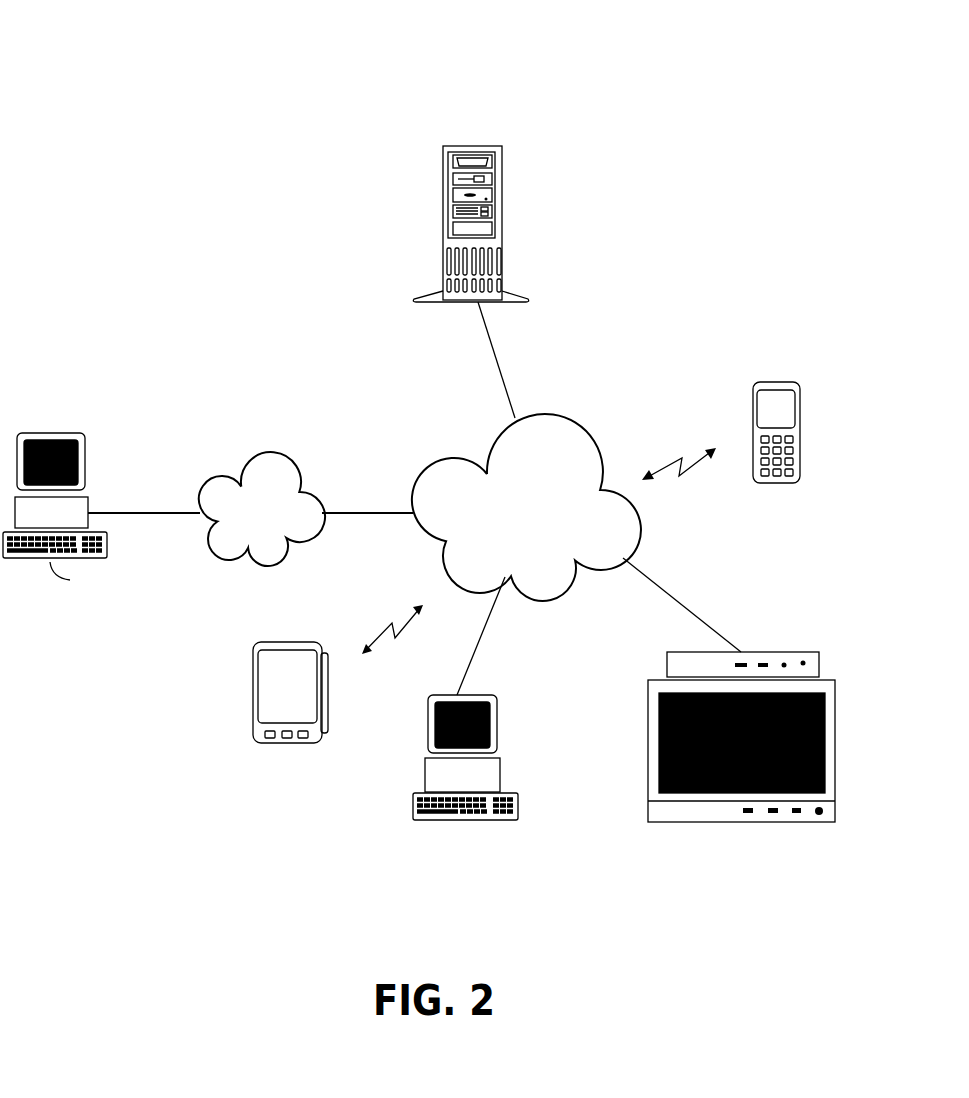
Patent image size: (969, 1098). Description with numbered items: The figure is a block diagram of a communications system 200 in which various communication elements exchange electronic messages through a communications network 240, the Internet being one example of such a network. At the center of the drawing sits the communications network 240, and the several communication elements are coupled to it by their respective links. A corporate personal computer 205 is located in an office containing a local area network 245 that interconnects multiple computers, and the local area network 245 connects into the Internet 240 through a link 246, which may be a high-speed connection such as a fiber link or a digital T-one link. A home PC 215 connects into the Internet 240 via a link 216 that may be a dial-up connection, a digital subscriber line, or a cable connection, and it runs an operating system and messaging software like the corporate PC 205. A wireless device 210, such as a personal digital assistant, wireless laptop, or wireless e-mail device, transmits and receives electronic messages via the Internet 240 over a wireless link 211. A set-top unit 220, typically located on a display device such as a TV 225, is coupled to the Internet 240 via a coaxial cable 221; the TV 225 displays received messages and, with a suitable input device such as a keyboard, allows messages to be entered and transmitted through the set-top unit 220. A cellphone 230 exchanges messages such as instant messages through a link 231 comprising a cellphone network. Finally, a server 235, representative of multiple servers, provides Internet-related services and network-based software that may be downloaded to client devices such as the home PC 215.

The communications system 200 is at (165, 119).
The corporate personal computer 205 is at (35, 433).
The wireless device 210 is at (280, 642).
The wireless link 211 is at (397, 635).
The home PC 215 is at (497, 712).
The link 216 is at (477, 655).
The set-top unit 220 is at (767, 652).
The coaxial cable 221 is at (665, 590).
The TV 225 is at (835, 765).
The cellphone 230 is at (803, 432).
The link 231 is at (685, 472).
The server 235 is at (472, 145).
The communications network 240 is at (568, 416).
The local area network 245 is at (278, 450).
The link 246 is at (347, 512).